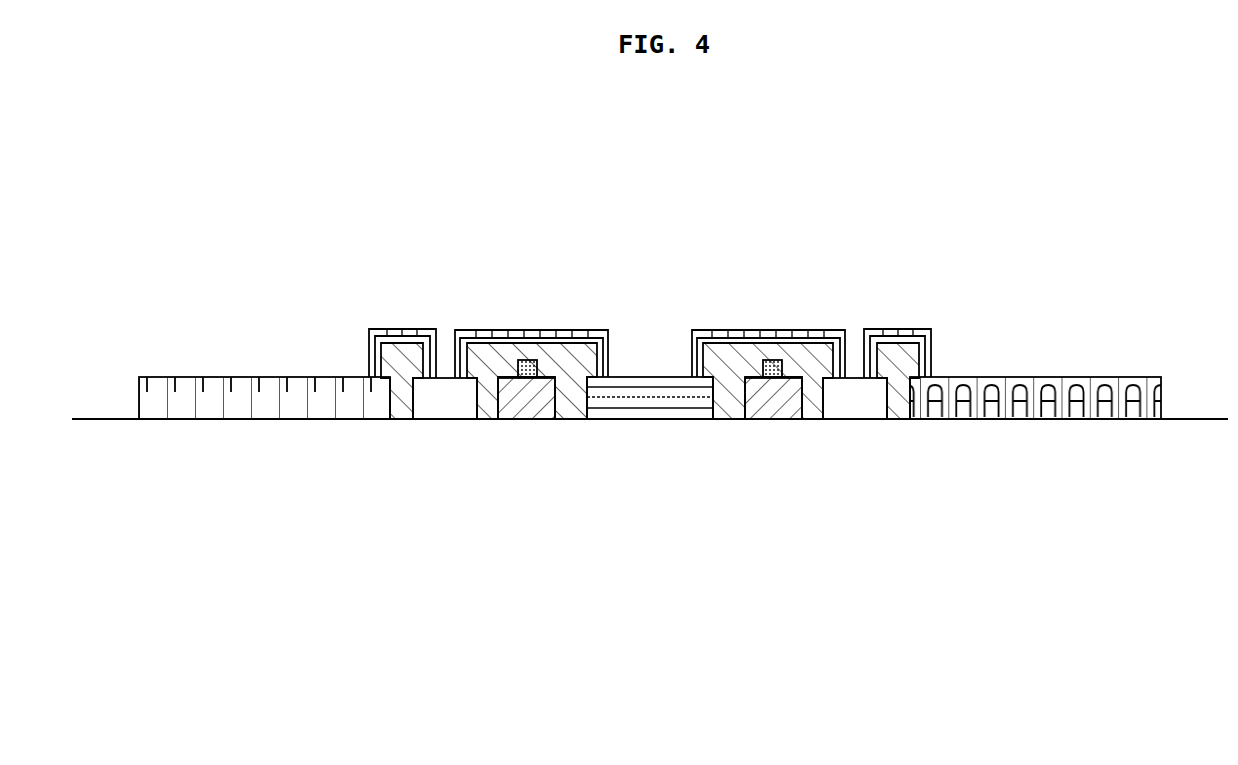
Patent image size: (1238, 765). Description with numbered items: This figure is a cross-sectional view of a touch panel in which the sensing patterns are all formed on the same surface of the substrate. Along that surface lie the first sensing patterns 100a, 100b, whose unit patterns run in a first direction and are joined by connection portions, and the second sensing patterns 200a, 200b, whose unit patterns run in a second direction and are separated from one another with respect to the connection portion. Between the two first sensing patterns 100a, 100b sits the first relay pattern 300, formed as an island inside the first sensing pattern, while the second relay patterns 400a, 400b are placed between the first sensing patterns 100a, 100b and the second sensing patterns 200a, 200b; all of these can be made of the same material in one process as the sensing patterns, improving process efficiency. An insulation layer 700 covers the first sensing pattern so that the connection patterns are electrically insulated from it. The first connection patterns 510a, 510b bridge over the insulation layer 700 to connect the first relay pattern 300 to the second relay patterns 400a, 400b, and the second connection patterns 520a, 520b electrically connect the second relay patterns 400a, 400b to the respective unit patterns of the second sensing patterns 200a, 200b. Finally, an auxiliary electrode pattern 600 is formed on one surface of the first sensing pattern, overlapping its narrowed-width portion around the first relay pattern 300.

The first sensing pattern 100a is at (780, 397).
The first sensing pattern 100b is at (521, 400).
The second sensing pattern 200a is at (1057, 398).
The second sensing pattern 200b is at (242, 400).
The first relay pattern 300 is at (650, 397).
The second relay pattern 400a is at (857, 398).
The second relay pattern 400b is at (443, 398).
The first connection pattern 510a is at (768, 338).
The first connection pattern 510b is at (532, 338).
The second connection pattern 520a is at (923, 362).
The second connection pattern 520b is at (377, 362).
The auxiliary electrode pattern 600 is at (518, 368).
The insulation layer 700 is at (490, 350).